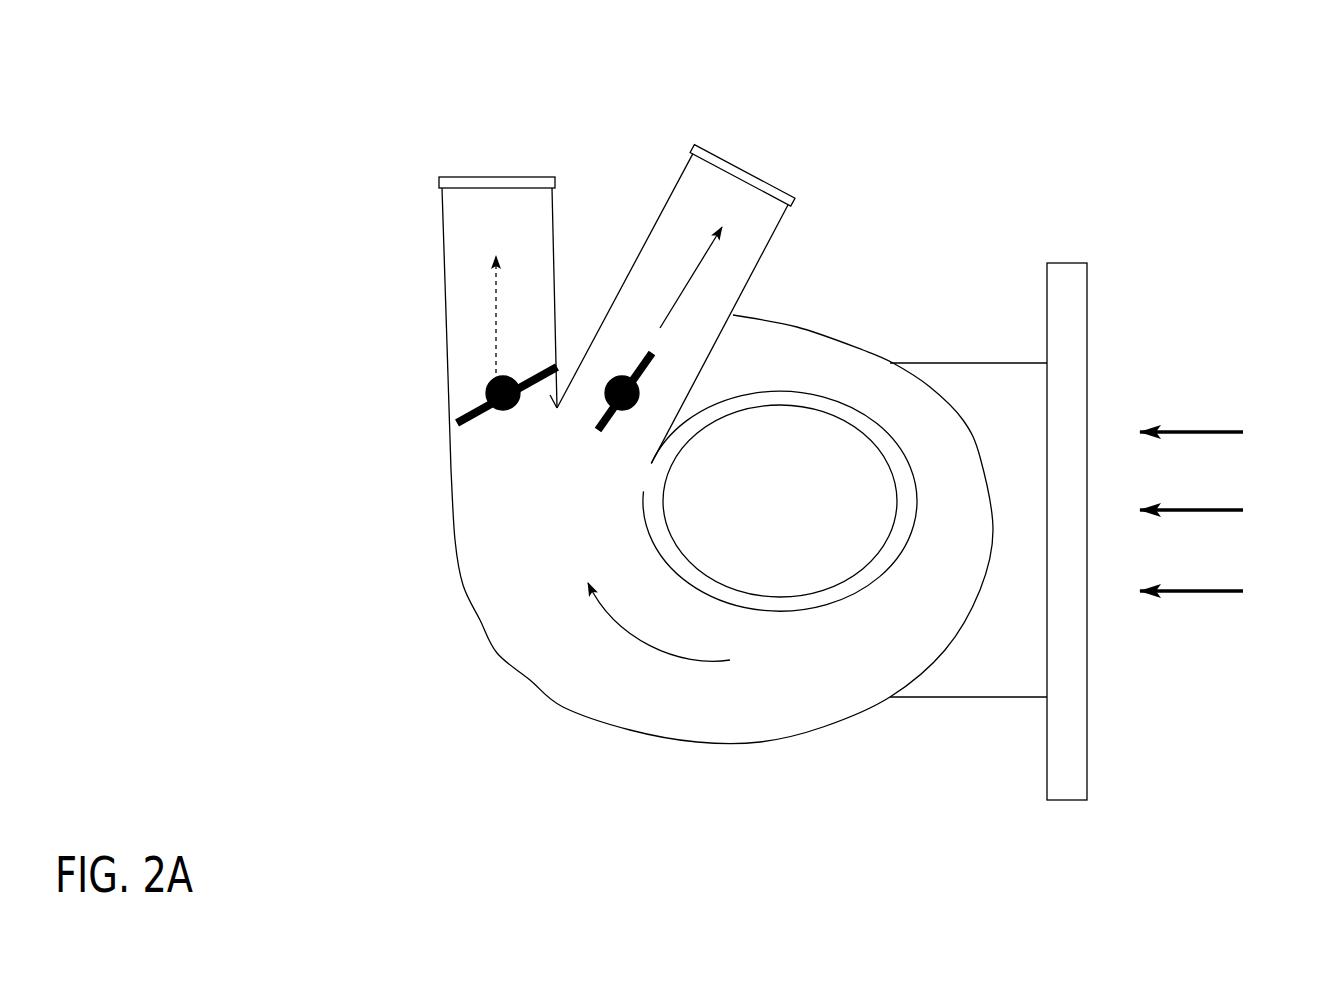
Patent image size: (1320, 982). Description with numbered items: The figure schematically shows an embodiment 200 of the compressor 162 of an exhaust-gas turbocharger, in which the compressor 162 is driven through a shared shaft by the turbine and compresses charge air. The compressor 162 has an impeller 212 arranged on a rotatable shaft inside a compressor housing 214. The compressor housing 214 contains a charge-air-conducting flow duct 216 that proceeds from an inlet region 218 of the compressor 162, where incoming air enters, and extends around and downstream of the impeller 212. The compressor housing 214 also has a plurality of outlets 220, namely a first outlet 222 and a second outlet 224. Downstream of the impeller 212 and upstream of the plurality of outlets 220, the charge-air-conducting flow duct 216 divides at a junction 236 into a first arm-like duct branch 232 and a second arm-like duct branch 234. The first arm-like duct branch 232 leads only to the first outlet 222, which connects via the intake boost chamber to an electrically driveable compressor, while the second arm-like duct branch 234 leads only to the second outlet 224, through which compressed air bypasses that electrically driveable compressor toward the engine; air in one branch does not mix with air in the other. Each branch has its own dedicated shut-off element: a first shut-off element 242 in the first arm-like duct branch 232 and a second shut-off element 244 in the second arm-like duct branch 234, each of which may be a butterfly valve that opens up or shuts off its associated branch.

The embodiment of the compressor 200 is at (1232, 60).
The compressor 162 is at (957, 233).
The impeller 212 is at (793, 530).
The compressor housing 214 is at (813, 692).
The charge-air-conducting flow duct 216 is at (965, 552).
The inlet region 218 is at (968, 392).
The plurality of outlets 220 is at (800, 58).
The first outlet 222 is at (494, 182).
The second outlet 224 is at (750, 172).
The first arm-like duct branch 232 is at (467, 217).
The second arm-like duct branch 234 is at (753, 210).
The junction 236 is at (548, 413).
The first shut-off element 242 is at (455, 416).
The second shut-off element 244 is at (638, 357).